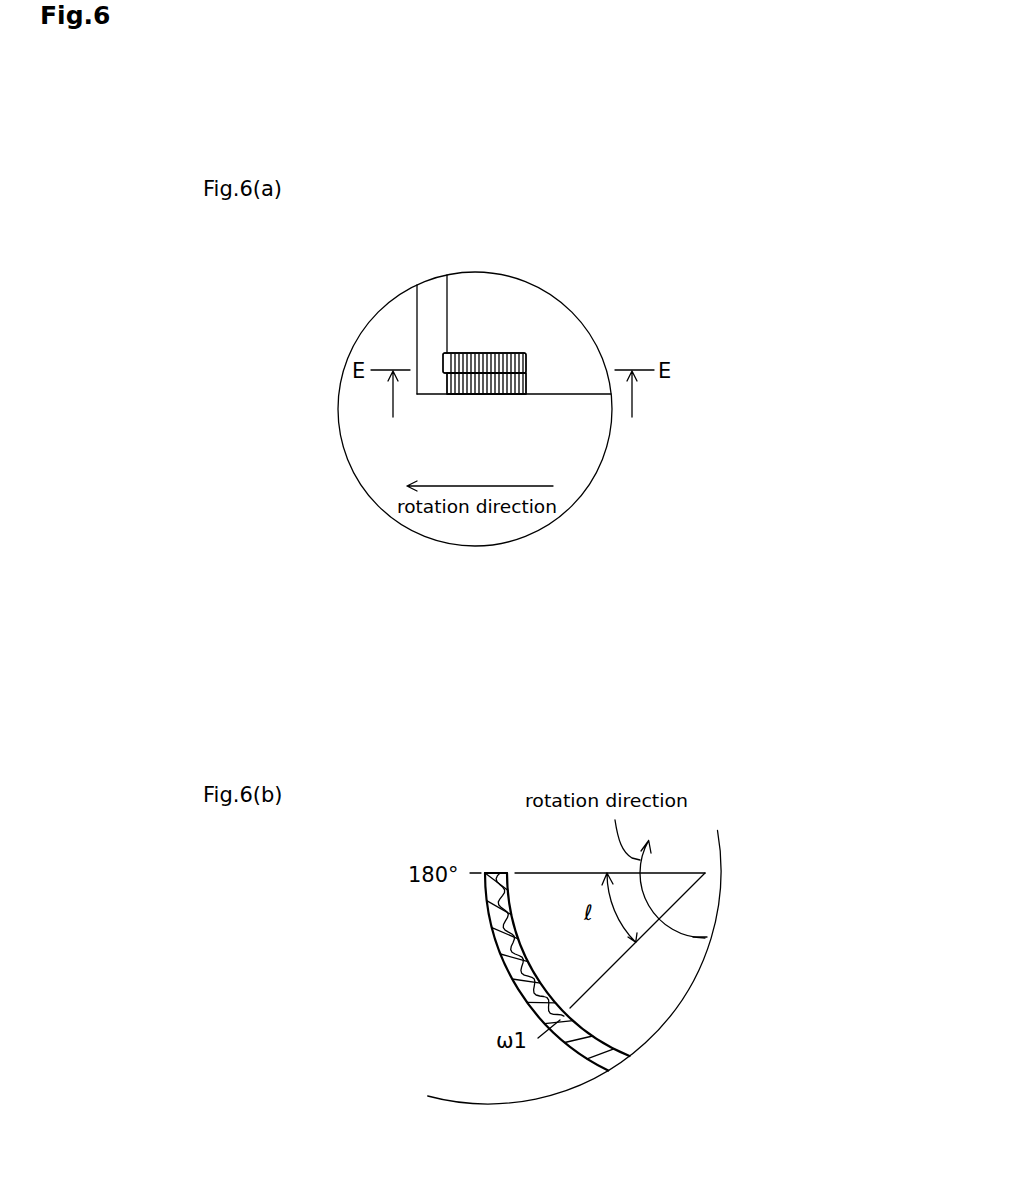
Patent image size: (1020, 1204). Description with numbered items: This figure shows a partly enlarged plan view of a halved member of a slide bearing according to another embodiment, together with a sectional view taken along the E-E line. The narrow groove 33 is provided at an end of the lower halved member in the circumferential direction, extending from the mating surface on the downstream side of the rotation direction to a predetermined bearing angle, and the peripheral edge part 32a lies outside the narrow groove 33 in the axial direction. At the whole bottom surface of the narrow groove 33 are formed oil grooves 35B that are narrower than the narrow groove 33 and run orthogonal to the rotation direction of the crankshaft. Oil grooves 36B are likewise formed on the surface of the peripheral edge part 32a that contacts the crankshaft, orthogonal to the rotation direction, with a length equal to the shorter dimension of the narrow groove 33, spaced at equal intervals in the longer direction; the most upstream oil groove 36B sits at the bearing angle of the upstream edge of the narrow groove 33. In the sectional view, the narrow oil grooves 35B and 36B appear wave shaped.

In FIG. 6A, the narrow groove 33 is at (463, 351).
In FIG. 6B, the narrow groove 33 is at (520, 965).
In FIG. 6A, the oil groove 35B is at (498, 352).
In FIG. 6B, the oil groove 35B is at (492, 923).
In FIG. 6A, the oil groove 36B is at (522, 394).
In FIG. 6A, the peripheral edge part 32a is at (513, 394).